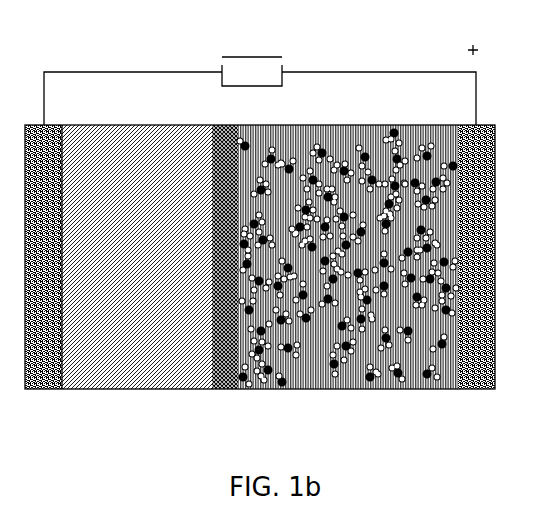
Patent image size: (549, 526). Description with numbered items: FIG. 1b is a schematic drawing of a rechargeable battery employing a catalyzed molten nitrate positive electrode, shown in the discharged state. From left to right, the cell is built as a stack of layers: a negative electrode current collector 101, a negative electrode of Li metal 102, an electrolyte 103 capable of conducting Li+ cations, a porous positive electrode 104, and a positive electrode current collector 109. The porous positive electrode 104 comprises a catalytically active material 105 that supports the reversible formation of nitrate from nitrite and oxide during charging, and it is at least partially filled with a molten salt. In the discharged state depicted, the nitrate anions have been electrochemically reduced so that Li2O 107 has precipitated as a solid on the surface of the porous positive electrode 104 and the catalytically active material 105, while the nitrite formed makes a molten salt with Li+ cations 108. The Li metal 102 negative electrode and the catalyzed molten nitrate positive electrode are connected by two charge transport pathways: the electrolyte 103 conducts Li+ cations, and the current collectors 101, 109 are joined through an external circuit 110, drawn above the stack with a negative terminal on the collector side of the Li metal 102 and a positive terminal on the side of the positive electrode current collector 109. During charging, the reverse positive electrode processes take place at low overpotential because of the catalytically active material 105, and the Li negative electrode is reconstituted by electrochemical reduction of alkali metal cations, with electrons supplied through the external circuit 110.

The negative electrode current collector 101 is at (38, 389).
The Li metal negative electrode 102 is at (97, 389).
The electrolyte 103 is at (225, 389).
The porous positive electrode 104 is at (282, 389).
The catalytically active material 105 is at (335, 389).
The Li2O 107 is at (438, 389).
The molten salt of Li+ cations and NO2- anions 108 is at (392, 389).
The positive electrode current collector 109 is at (480, 389).
The external circuit 110 is at (252, 51).